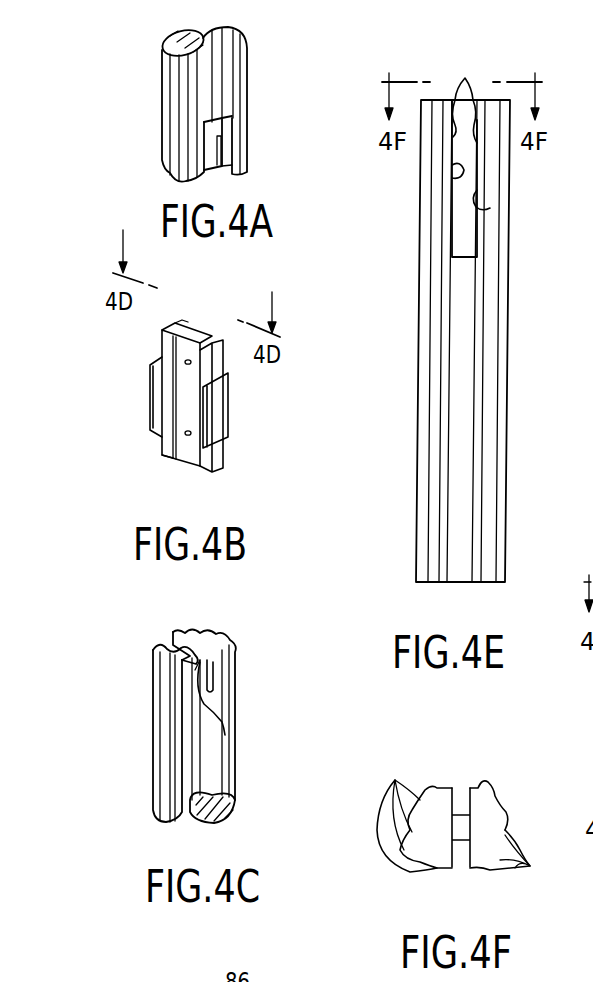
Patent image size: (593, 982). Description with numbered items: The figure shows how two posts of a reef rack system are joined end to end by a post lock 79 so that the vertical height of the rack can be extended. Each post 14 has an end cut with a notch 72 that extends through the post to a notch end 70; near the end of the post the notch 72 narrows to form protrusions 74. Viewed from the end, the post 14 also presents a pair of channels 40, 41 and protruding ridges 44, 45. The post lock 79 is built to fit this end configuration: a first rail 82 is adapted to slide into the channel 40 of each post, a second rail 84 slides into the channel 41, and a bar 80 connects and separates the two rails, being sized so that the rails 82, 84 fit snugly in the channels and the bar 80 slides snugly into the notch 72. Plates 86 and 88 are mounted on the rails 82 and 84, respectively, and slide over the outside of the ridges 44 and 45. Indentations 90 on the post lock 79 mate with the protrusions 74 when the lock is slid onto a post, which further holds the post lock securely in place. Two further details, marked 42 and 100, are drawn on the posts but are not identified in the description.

In FIG. 4A, the post 14 is at (157, 77).
In FIG. 4C, the post 14 is at (240, 780).
In FIG. 4A, the channel 40 is at (220, 130).
In FIG. 4C, the channel 40 is at (211, 694).
In FIG. 4E, the channel 40 is at (460, 395).
In FIG. 4F, the channel 40 is at (460, 792).
In FIG. 4A, the notch 72 is at (218, 145).
In FIG. 4C, the notch 72 is at (214, 665).
In FIG. 4E, the notch 72 is at (452, 165).
In FIG. 4A, the lower shoulder 100 is at (237, 172).
In FIG. 4B, the post lock 79 is at (225, 475).
In FIG. 4B, the bar 80 is at (188, 340).
In FIG. 4B, the indentations 90 is at (185, 362).
In FIG. 4B, the plate 88 is at (150, 388).
In FIG. 4B, the second rail 84 is at (165, 446).
In FIG. 4B, the plate 86 is at (220, 421).
In FIG. 4B, the first rail 82 is at (220, 371).
In FIG. 4C, the cam tongue 42 is at (221, 709).
In FIG. 4F, the cam tongue 42 is at (478, 788).
In FIG. 4C, the ridge 44 is at (184, 747).
In FIG. 4E, the ridge 44 is at (438, 446).
In FIG. 4F, the ridge 44 is at (414, 815).
In FIG. 4E, the ridge 45 is at (483, 508).
In FIG. 4F, the ridge 45 is at (513, 855).
In FIG. 4E, the notch end 70 is at (463, 257).
In FIG. 4F, the notch end 70 is at (462, 827).
In FIG. 4E, the protrusions 74 is at (465, 90).
In FIG. 4F, the channel 41 is at (460, 868).